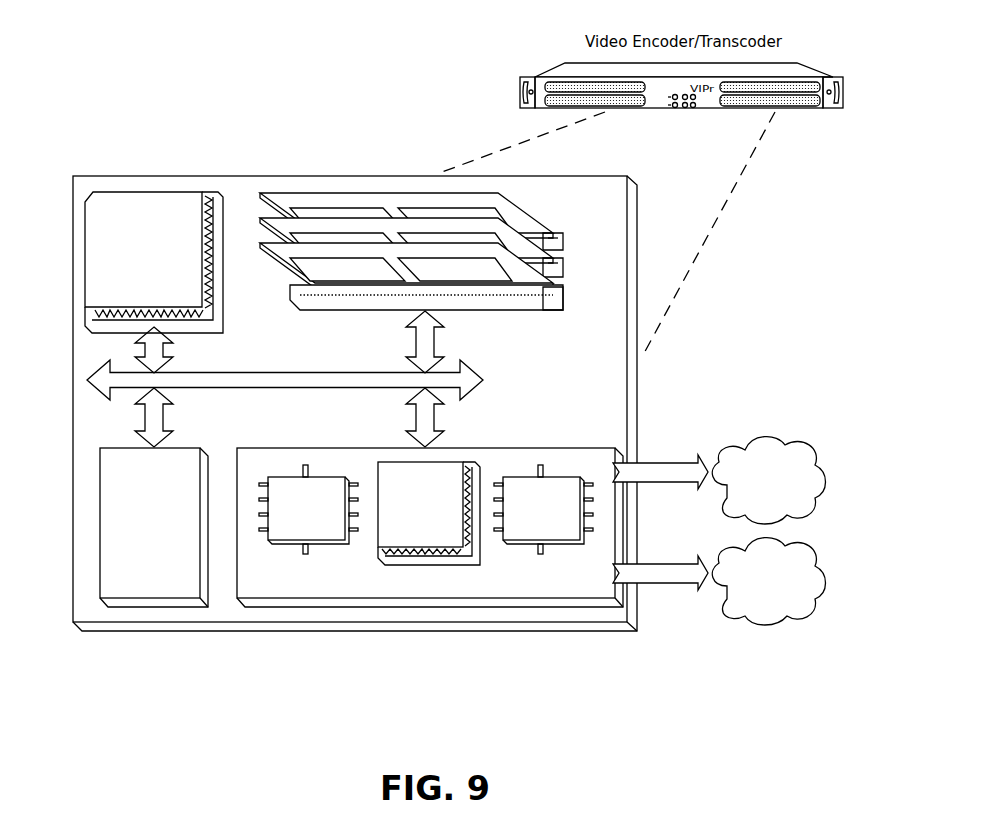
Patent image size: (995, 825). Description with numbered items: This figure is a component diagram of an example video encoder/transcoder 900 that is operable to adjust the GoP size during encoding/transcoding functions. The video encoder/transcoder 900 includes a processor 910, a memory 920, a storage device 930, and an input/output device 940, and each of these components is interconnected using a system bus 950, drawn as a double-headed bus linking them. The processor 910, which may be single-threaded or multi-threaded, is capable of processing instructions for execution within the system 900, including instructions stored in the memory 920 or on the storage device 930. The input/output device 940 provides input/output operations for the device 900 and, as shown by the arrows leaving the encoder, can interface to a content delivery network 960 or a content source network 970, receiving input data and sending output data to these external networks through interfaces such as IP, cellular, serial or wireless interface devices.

The video encoder/transcoder 900 is at (148, 630).
The processor 910 is at (154, 262).
The memory 920 is at (537, 226).
The storage device 930 is at (154, 527).
The input/output device 940 is at (580, 448).
The system bus 950 is at (281, 388).
The content delivery network 960 is at (800, 431).
The content source network 970 is at (742, 620).